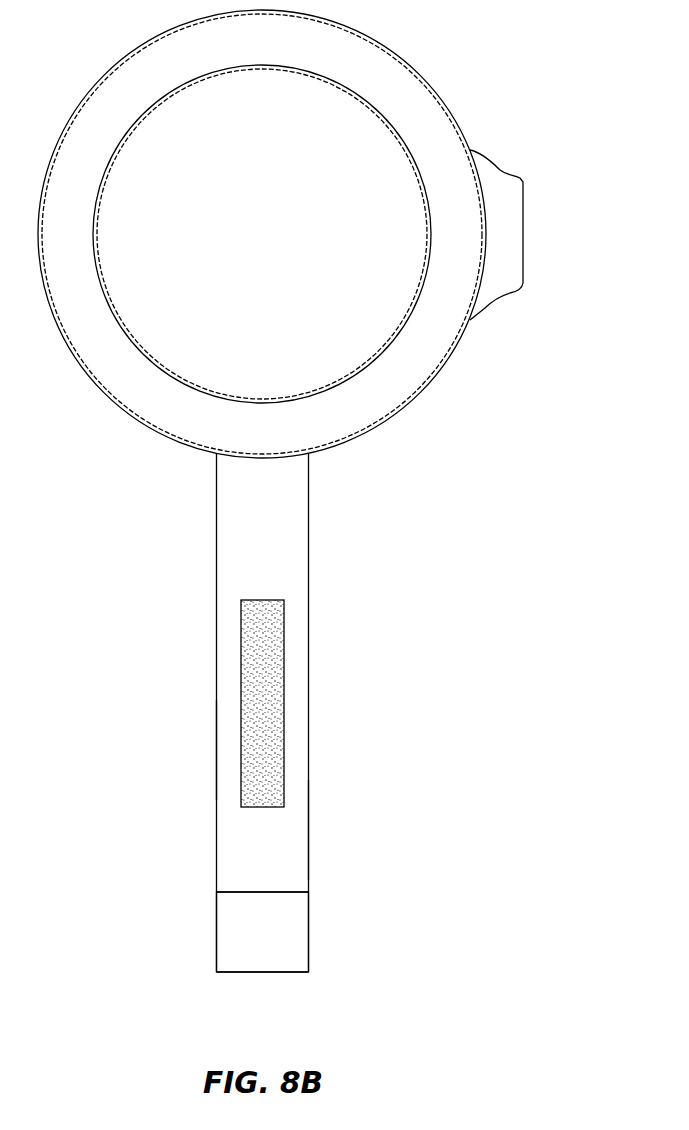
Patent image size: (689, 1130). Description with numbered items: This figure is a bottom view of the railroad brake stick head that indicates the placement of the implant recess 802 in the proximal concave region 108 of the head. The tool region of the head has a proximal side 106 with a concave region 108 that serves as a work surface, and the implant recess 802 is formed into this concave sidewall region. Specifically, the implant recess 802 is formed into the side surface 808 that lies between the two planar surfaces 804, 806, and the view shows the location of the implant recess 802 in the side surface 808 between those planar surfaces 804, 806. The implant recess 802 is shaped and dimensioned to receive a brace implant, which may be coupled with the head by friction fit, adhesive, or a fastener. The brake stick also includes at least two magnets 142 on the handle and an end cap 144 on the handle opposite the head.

The proximal side 106 is at (270, 922).
The concave region 108 is at (273, 575).
The magnets 142 is at (500, 262).
The end cap 144 is at (377, 291).
The implant recess 802 is at (263, 710).
The planar surface 804 is at (308, 828).
The planar surface 806 is at (217, 756).
The side surface 808 is at (232, 832).